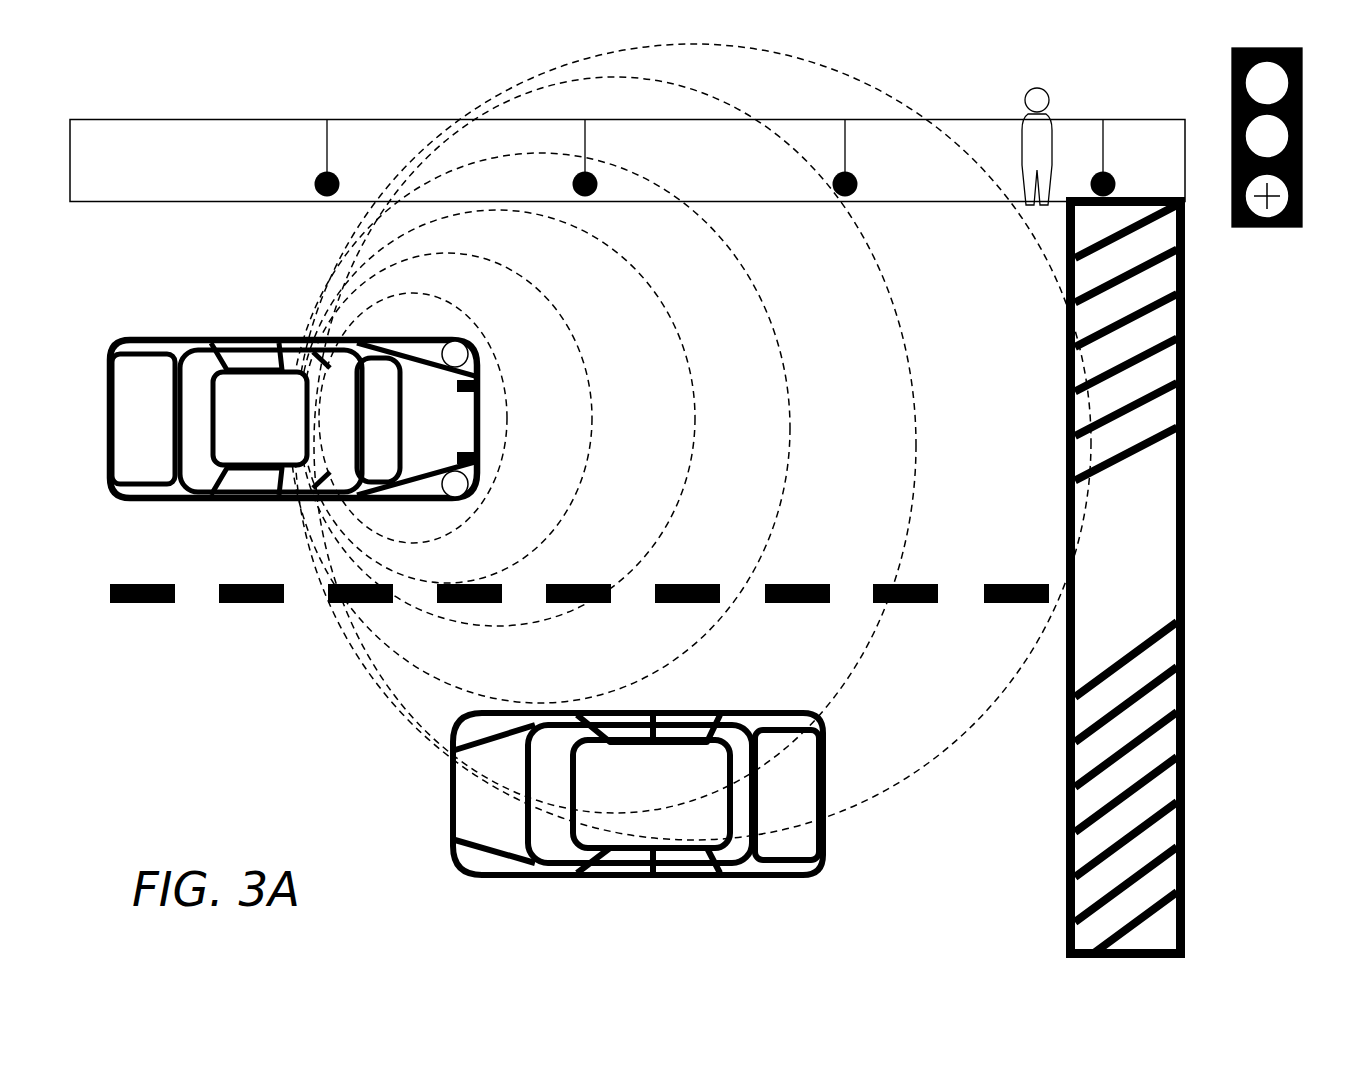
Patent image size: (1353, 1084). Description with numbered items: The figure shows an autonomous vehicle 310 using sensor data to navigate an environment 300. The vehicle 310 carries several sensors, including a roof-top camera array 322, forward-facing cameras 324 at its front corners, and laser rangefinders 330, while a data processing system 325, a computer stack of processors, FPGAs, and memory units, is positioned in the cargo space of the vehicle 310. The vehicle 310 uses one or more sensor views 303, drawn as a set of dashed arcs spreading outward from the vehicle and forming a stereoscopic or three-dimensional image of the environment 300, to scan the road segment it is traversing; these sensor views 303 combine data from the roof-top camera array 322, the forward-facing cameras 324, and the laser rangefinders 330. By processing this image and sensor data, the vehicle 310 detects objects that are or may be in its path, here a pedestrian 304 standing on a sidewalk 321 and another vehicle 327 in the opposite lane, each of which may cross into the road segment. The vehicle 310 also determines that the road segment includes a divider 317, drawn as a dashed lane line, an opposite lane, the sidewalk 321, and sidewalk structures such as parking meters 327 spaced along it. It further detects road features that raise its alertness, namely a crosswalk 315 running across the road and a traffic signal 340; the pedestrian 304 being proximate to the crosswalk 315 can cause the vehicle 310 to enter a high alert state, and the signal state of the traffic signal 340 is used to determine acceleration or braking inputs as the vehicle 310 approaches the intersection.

The environment 300 is at (157, 98).
The sensor view 303 is at (690, 442).
The pedestrian 304 is at (1045, 145).
The autonomous vehicle 310 is at (333, 397).
The crosswalk 315 is at (1126, 585).
The divider 317 is at (328, 603).
The sidewalk 321 is at (627, 161).
The roof-top camera array 322 is at (260, 418).
The forward-facing camera 324 is at (492, 348).
The data processing system 325 is at (143, 419).
The parking meter 327 is at (585, 197).
The laser rangefinder 330 is at (480, 378).
The traffic signal 340 is at (1283, 186).